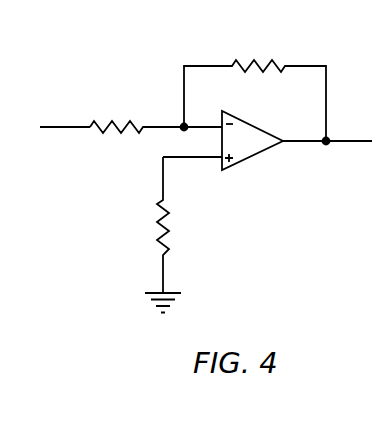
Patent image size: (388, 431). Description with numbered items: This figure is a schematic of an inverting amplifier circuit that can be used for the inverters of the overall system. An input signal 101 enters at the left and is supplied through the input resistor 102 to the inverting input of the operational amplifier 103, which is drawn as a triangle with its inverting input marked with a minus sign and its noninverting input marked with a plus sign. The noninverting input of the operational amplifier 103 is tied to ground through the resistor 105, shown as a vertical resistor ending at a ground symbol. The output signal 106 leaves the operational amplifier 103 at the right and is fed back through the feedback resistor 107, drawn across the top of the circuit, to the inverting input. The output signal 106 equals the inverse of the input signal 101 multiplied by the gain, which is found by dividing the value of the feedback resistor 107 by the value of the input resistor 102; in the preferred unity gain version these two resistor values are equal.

The input signal 101 is at (66, 124).
The input resistor 102 is at (121, 124).
The operational amplifier 103 is at (243, 161).
The resistor 105 is at (152, 230).
The output signal 106 is at (301, 143).
The feedback resistor 107 is at (256, 62).